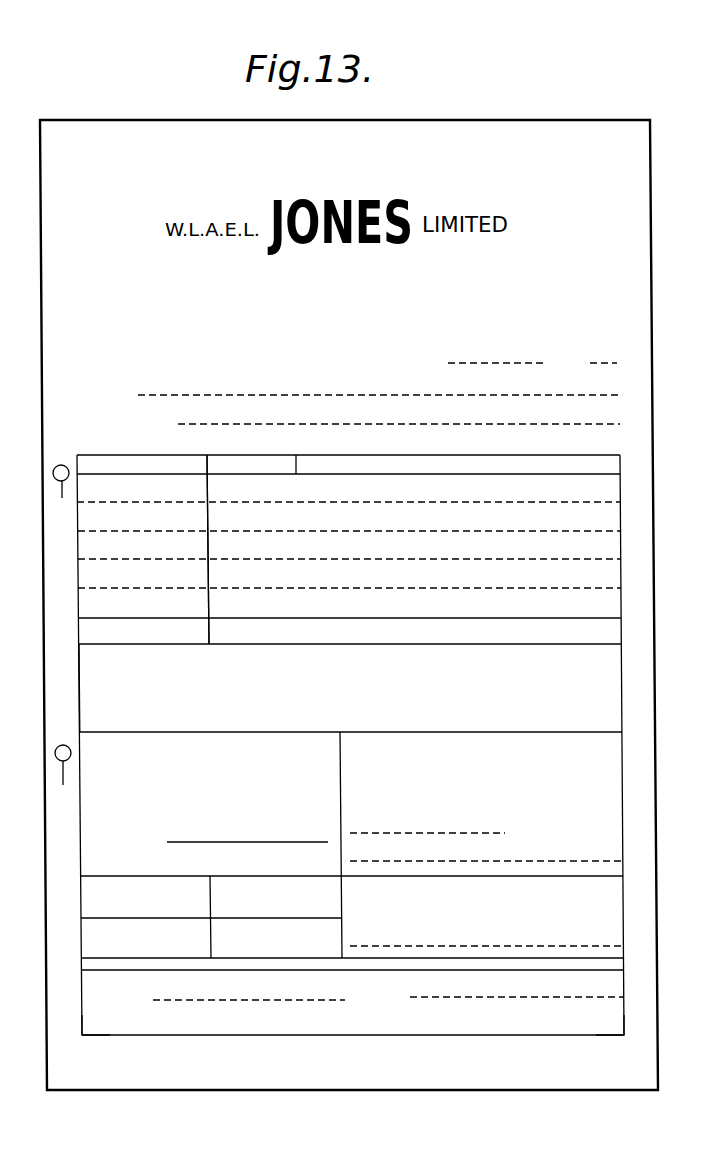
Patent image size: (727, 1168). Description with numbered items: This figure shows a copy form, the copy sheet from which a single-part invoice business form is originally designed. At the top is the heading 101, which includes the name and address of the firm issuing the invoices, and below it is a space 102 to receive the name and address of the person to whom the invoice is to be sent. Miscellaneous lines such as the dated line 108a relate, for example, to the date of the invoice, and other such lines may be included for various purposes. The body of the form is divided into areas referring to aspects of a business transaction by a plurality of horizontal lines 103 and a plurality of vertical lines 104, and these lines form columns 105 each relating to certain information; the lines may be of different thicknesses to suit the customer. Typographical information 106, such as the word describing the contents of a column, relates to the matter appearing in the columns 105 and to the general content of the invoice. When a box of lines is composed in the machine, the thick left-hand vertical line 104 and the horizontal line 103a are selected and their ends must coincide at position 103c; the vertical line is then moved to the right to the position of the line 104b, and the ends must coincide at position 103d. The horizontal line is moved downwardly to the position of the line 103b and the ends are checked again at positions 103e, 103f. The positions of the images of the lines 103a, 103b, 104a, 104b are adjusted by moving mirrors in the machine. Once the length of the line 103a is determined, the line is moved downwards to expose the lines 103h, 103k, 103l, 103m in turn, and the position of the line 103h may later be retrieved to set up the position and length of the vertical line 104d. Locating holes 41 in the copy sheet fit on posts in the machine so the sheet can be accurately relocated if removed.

The heading 101 is at (548, 167).
The space 102 is at (329, 395).
The date line 108a is at (542, 363).
The horizontal lines 103 is at (314, 453).
The horizontal line 103a is at (533, 455).
The horizontal line position 103b is at (542, 1035).
The coincidence position 103c is at (77, 455).
The coincidence position 103d is at (620, 455).
The checking position 103e is at (82, 1037).
The checking position 103f is at (625, 1035).
The horizontal line 103h is at (468, 644).
The horizontal line 103k is at (453, 732).
The horizontal line 103l is at (513, 957).
The horizontal line 103m is at (507, 971).
The vertical lines 104 is at (78, 578).
The vertical line 104a is at (80, 697).
The vertical line position 104b is at (620, 510).
The vertical line 104d is at (208, 545).
The columns 105 is at (349, 607).
The typographical information 106 is at (440, 474).
The locating holes 41 is at (64, 639).